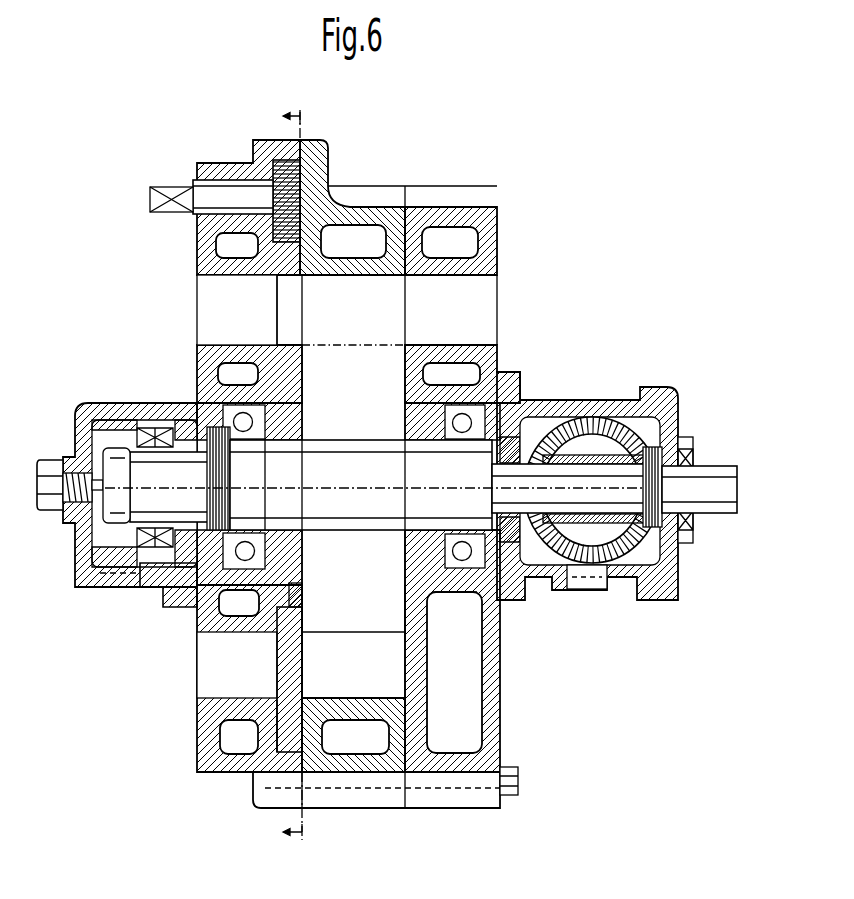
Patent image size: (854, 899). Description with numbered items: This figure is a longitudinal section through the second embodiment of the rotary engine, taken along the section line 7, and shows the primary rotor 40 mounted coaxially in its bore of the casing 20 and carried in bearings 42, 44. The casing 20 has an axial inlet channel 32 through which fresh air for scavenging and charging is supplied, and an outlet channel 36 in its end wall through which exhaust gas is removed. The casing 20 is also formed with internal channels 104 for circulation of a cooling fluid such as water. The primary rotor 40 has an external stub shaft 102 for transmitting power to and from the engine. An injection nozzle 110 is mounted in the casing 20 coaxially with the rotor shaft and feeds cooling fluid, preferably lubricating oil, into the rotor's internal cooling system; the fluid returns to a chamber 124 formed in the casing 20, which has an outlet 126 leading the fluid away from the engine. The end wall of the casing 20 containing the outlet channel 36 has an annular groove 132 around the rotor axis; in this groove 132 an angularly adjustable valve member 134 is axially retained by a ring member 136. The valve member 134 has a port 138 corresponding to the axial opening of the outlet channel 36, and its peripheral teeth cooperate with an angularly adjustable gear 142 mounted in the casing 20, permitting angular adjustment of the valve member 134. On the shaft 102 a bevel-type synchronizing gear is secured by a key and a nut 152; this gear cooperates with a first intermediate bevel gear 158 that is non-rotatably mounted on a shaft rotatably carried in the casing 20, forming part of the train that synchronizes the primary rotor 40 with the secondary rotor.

The section line 7- 7 is at (280, 475).
The casing 20 is at (372, 222).
The inlet channel 32 is at (500, 323).
The outlet channel 36 is at (215, 300).
The primary rotor 40 is at (400, 609).
The bearing 42 is at (473, 595).
The bearing 44 is at (281, 527).
The stub shaft 102 is at (712, 477).
The internal channels 104 is at (215, 245).
The injection nozzle 110 is at (90, 432).
The chamber 124 is at (95, 540).
The outlet 126 is at (102, 578).
The groove 132 is at (277, 727).
The valve member 134 is at (277, 648).
The ring member 136 is at (314, 586).
The port 138 is at (277, 307).
The gear 142 is at (324, 139).
The nut 152 is at (670, 412).
The first intermediate bevel gear 158 is at (572, 422).